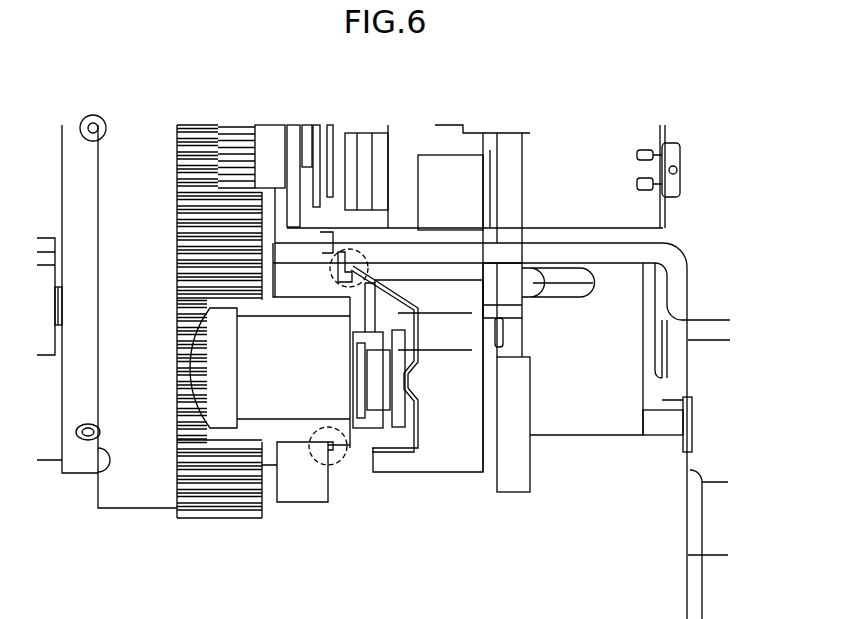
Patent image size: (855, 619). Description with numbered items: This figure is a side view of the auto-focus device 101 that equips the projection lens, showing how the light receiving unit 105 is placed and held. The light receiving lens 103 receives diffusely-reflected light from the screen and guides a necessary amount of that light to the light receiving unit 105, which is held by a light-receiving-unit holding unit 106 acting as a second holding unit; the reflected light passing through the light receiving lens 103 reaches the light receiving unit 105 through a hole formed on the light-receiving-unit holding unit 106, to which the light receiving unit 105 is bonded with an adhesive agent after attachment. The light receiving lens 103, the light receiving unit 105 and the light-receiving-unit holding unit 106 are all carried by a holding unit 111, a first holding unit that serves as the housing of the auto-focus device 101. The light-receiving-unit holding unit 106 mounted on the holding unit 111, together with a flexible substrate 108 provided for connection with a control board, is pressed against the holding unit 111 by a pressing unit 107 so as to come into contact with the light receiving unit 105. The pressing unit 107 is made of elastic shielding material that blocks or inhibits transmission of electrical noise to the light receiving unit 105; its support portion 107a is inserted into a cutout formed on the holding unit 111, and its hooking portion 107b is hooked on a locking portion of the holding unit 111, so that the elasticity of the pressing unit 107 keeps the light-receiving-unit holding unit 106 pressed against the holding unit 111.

The auto-focus device 101 is at (161, 345).
The light receiving lens 103 is at (221, 405).
The light receiving unit 105 is at (383, 400).
The light-receiving-unit holding unit 106 is at (362, 433).
The pressing unit 107 is at (418, 418).
The support portion 107a is at (360, 265).
The hooking portion 107b is at (327, 453).
The flexible substrate 108 is at (408, 418).
The holding unit 111 is at (300, 283).